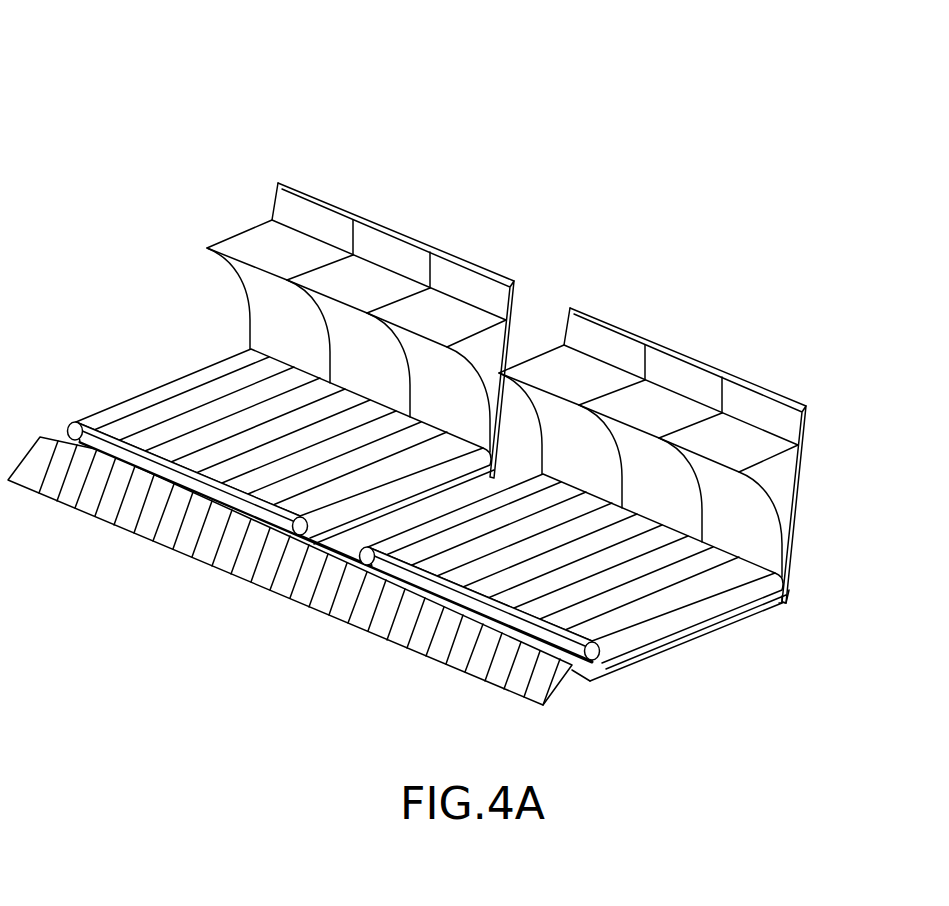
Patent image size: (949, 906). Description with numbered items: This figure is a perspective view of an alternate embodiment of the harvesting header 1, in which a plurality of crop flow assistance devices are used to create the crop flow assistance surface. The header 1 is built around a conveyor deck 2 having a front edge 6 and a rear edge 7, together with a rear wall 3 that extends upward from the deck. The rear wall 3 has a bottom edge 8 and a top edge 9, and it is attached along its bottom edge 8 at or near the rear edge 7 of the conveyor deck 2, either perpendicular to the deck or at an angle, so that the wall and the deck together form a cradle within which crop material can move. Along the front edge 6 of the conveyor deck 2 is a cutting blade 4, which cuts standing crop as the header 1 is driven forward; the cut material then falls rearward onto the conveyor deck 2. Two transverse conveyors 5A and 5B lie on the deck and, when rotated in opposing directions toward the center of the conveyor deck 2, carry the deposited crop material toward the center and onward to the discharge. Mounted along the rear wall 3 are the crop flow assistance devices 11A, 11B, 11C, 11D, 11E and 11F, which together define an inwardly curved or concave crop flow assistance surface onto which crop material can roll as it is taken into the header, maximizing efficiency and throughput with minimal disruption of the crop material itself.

The header 1 is at (397, 123).
The conveyor deck 2 is at (643, 662).
The rear wall 3 is at (272, 203).
The cutting blade 4 is at (287, 598).
The transverse conveyor 5A is at (137, 402).
The transverse conveyor 5B is at (655, 608).
The front edge 6 is at (580, 680).
The rear edge 7 is at (787, 608).
The bottom edge 8 is at (788, 603).
The top edge 9 is at (312, 192).
The crop flow assistance device 11A is at (220, 238).
The crop flow assistance device 11B is at (363, 273).
The third compartment 11C is at (457, 310).
The fourth compartment 11D is at (578, 370).
The fifth compartment 11E is at (668, 407).
The sixth compartment 11F is at (733, 438).